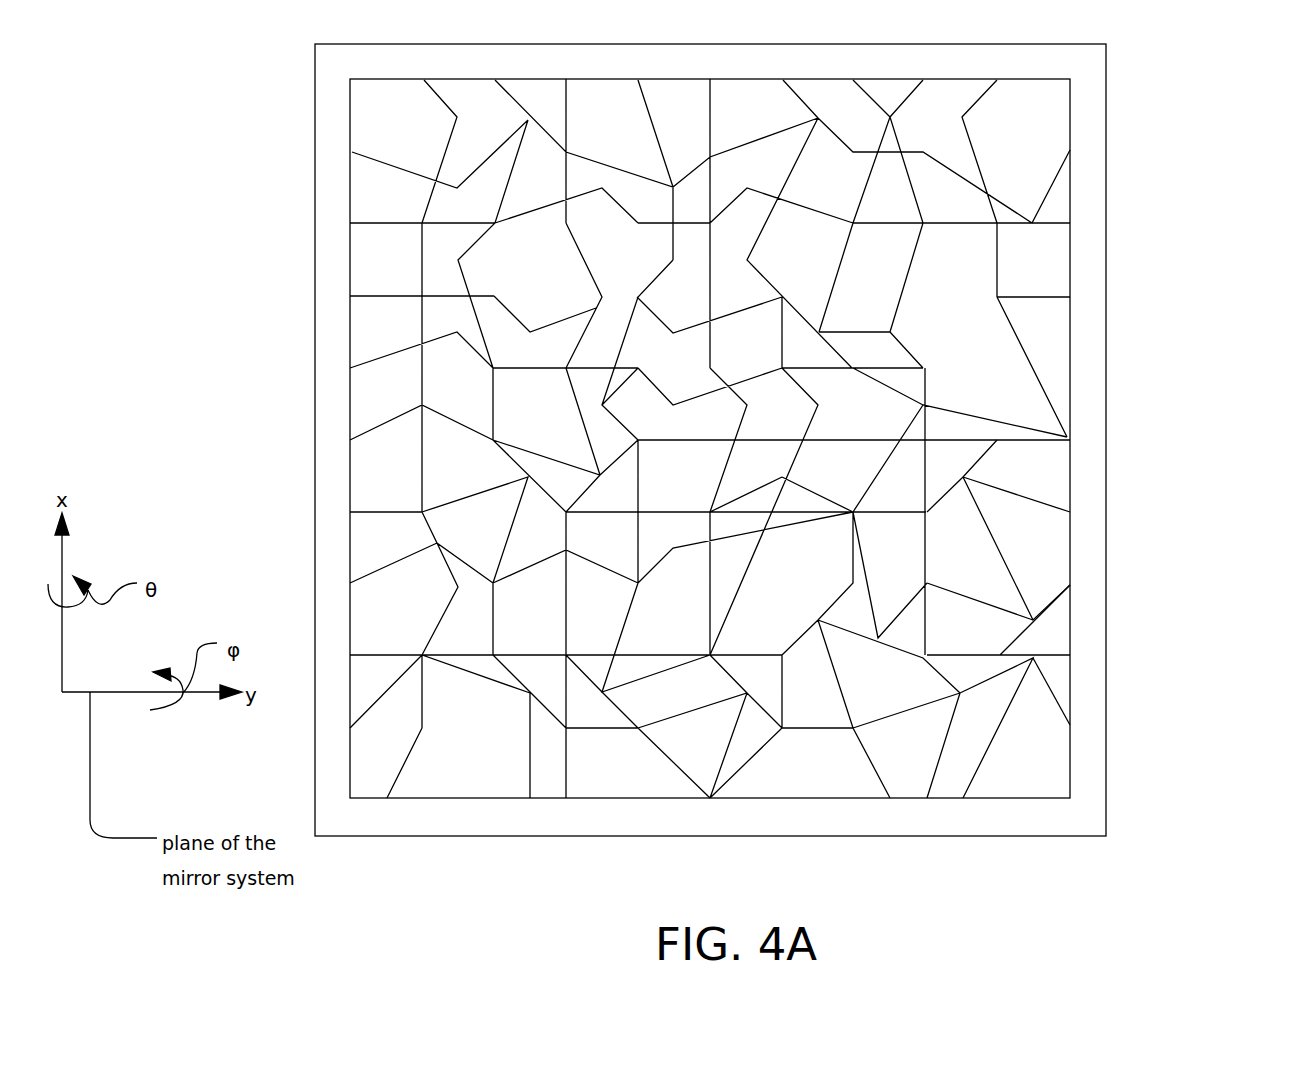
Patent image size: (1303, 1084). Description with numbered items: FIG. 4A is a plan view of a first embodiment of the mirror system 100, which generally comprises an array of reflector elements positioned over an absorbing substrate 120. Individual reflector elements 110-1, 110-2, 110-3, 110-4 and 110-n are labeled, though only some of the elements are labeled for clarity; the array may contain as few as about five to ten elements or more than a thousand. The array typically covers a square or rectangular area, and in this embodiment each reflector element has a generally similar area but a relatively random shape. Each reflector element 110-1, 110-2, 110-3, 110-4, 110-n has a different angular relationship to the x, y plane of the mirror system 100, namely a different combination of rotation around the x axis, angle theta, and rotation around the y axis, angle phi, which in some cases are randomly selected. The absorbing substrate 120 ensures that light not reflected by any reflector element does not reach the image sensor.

The mirror system 100 is at (1120, 208).
The absorbing substrate 120 is at (1085, 142).
The reflector element 110-1 is at (1050, 462).
The reflector element 110-2 is at (1045, 548).
The reflector element 110-3 is at (990, 583).
The reflector element 110-4 is at (990, 637).
The reflector element 110-n is at (1053, 642).